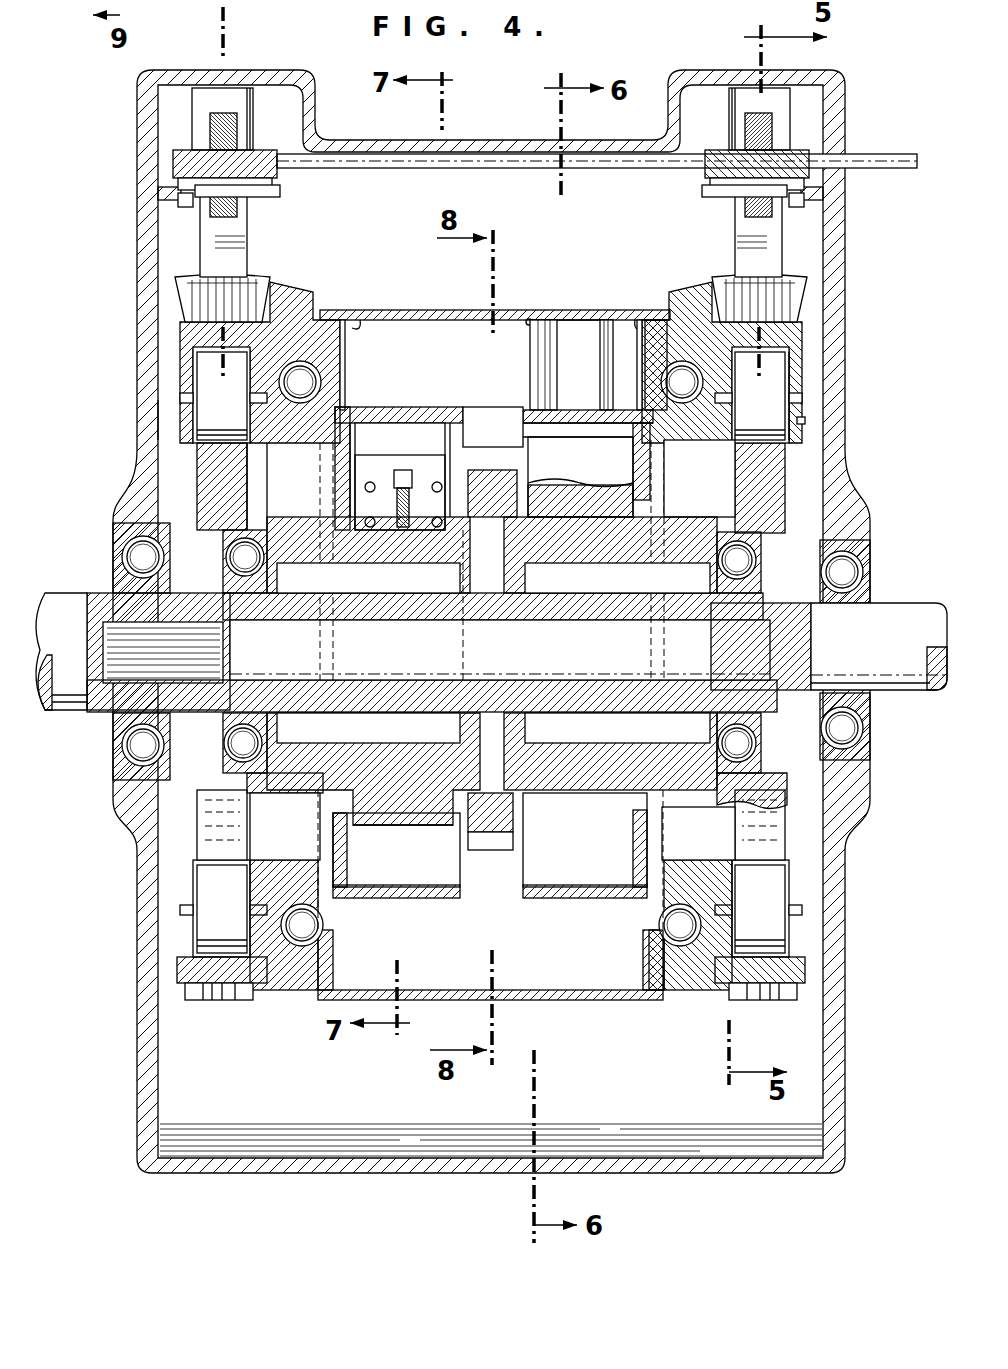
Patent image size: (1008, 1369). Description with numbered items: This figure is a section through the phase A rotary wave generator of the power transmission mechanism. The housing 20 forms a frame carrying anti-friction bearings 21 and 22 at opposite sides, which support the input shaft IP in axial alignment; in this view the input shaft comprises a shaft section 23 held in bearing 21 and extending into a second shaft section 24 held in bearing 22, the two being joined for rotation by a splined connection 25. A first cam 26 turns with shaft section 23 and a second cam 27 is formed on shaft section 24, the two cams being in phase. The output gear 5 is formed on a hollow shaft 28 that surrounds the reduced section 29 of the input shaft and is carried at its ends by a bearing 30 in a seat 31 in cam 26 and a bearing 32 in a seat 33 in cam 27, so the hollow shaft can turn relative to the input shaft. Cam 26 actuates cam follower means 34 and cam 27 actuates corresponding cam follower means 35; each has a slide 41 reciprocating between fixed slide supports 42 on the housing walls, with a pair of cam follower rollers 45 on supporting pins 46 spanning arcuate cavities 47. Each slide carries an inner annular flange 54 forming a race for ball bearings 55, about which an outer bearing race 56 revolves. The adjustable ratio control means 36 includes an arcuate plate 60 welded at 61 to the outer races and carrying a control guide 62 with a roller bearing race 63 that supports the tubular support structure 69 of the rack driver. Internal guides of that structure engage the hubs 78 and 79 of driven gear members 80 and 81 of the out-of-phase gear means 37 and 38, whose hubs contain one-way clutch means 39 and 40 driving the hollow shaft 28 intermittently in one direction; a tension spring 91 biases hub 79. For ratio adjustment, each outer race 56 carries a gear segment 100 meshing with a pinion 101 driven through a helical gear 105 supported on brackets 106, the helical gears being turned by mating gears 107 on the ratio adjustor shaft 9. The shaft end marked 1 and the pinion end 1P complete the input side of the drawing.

The input shaft 1 is at (58, 592).
The input shaft pinion end 1P is at (62, 712).
The output gear 5 is at (493, 827).
The ratio adjustor shaft 9 is at (890, 169).
The housing 20 is at (698, 72).
The anti-friction bearing 21 is at (860, 562).
The anti-friction bearing 22 is at (112, 537).
The shaft section 23 is at (912, 692).
The shaft section 24 is at (100, 708).
The splined connection 25 is at (205, 660).
The first cam 26 is at (778, 477).
The second cam 27 is at (205, 462).
The hollow shaft 28 is at (393, 702).
The reduced section 29 is at (432, 652).
The bearing 30 is at (780, 805).
The seat 31 is at (745, 540).
The bearing 32 is at (262, 530).
The seat 33 is at (238, 542).
The cam follower means 34 is at (846, 380).
The cam follower means 35 is at (156, 418).
The adjustable ratio control means 36 is at (567, 306).
The gear means 37 is at (600, 797).
The gear means 38 is at (405, 825).
The one-way clutch means 39 is at (612, 590).
The one-way clutch means 40 is at (403, 588).
The slide 41 is at (806, 420).
The slide supports 42 is at (190, 993).
The cam follower rollers 45 is at (207, 432).
The supporting pins 46 is at (185, 397).
The arcuate cavities 47 is at (798, 345).
The inner annular flange 54 is at (342, 405).
The ball bearings 55 is at (310, 378).
The outer bearing race 56 is at (346, 348).
The arcuate plate 60 is at (432, 310).
The welding 61 is at (358, 318).
The control guide 62 is at (528, 320).
The roller bearing race 63 is at (548, 352).
The tubular support structure 69 is at (560, 410).
The hub 78 is at (690, 432).
The hub 79 is at (283, 777).
The driven gear member 80 is at (588, 470).
The driven gear member 81 is at (425, 827).
The tension spring 91 is at (400, 468).
The gear segment 100 is at (292, 290).
The pinion 101 is at (175, 290).
The helical gear 105 is at (173, 160).
The brackets 106 is at (280, 192).
The mating gears 107 is at (210, 125).